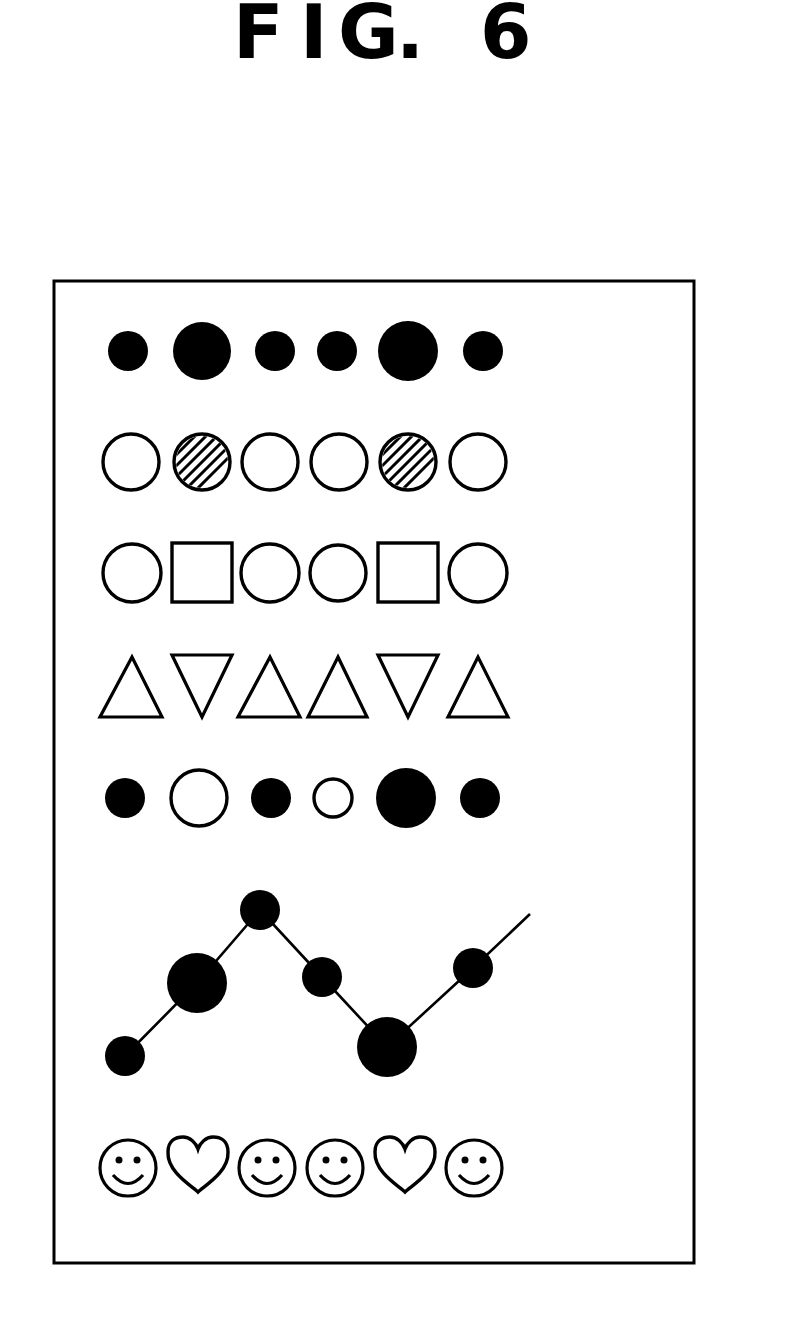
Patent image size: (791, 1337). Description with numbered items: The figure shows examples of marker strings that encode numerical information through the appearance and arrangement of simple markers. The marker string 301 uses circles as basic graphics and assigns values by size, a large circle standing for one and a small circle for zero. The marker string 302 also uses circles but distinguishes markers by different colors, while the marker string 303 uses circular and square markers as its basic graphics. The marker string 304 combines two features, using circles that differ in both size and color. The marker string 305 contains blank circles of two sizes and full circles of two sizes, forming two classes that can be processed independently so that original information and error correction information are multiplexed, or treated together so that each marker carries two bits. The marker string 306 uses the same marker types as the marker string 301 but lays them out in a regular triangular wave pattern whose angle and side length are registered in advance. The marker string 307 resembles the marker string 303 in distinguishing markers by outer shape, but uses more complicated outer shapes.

The marker string 301 is at (517, 354).
The marker string 302 is at (517, 465).
The marker string 303 is at (517, 575).
The marker string 304 is at (517, 691).
The marker string 305 is at (517, 799).
The marker string 306 is at (515, 973).
The marker string 307 is at (503, 1172).